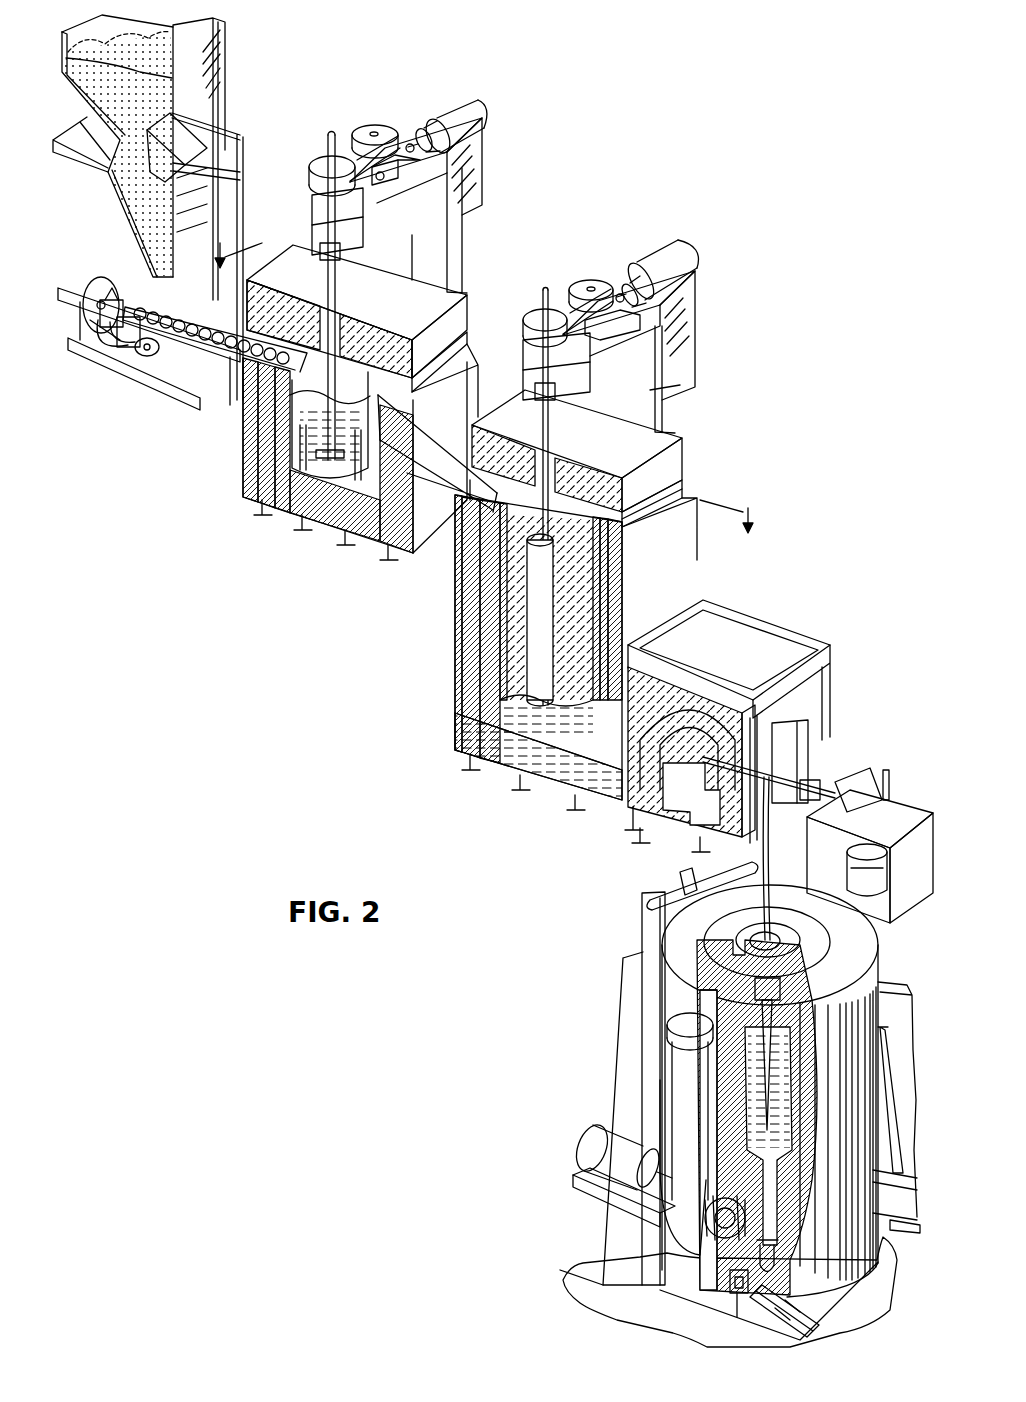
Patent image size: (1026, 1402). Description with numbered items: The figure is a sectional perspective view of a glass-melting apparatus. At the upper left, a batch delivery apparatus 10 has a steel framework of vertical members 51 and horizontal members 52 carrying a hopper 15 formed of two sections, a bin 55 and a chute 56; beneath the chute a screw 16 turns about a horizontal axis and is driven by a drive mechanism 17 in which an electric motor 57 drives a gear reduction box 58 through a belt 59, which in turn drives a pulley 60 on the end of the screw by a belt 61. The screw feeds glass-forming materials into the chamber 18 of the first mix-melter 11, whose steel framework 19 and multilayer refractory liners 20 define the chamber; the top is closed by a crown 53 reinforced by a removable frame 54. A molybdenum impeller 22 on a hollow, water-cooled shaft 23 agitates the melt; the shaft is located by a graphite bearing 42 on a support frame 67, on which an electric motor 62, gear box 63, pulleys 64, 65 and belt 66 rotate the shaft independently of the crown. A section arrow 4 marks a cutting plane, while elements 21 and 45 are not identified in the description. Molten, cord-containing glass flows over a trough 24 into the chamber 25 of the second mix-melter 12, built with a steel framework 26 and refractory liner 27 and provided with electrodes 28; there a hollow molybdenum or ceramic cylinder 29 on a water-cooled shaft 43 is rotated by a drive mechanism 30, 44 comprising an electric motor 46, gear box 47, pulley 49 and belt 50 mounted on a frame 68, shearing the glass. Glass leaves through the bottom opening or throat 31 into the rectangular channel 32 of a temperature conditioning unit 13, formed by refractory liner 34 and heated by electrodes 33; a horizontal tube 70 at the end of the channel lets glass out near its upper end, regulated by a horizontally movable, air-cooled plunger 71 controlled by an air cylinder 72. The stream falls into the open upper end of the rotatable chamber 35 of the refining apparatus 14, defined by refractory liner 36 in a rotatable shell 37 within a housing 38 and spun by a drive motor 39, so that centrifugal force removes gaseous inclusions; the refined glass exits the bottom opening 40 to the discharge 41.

The section line 4 is at (485, 388).
The batch delivery apparatus 10 is at (240, 92).
The first mix-melter 11 is at (482, 252).
The second mix-melter 12 is at (697, 422).
The temperature conditioning unit 13 is at (768, 600).
The refining apparatus 14 is at (603, 1052).
The hopper 15 is at (228, 66).
The screw 16 is at (228, 370).
The drive mechanism 17 is at (100, 372).
The chamber 18 is at (292, 400).
The steel framework 19 is at (358, 546).
The refractory liners 20 is at (258, 470).
The stirrer blade 21 is at (300, 470).
The impeller 22 is at (355, 480).
The shaft 23 is at (325, 202).
The trough 24 is at (445, 478).
The chamber 25 is at (480, 690).
The steel framework 26 is at (565, 815).
The refractory liner 27 is at (460, 652).
The electrodes 28 is at (500, 720).
The cylinder 29 is at (546, 620).
The drive mechanism 30 is at (600, 270).
The opening 31 is at (605, 790).
The channel 32 is at (730, 700).
The electrodes 33 is at (672, 705).
The refractory liner 34 is at (715, 705).
The rotatable chamber 35 is at (700, 1000).
The refractory liner 36 is at (748, 1118).
The rotatable shell 37 is at (672, 1065).
The housing 38 is at (640, 1100).
The drive motor 39 is at (575, 1178).
The bottom opening 40 is at (730, 1290).
The discharge 41 is at (778, 1320).
The graphite bearing 42 is at (340, 262).
The shaft 43 is at (540, 410).
The drive mechanism 44 is at (712, 266).
The driven pulley 45 is at (530, 312).
The electric motor 46 is at (675, 258).
The gear box 47 is at (655, 335).
The pulley 49 is at (584, 280).
The belt 50 is at (545, 290).
The vertical members 51 is at (243, 176).
The horizontal members 52 is at (200, 205).
The crown 53 is at (455, 287).
The frame 54 is at (462, 335).
The bin 55 is at (92, 85).
The chute 56 is at (130, 208).
The electric motor 57 is at (160, 372).
The gear reduction box 58 is at (130, 362).
The belt 59 is at (150, 365).
The pulley 60 is at (90, 312).
The belt 61 is at (95, 345).
The electric motor 62 is at (472, 112).
The gear box 63 is at (398, 180).
The pulley 64 is at (380, 125).
The pulley 65 is at (322, 160).
The belt 66 is at (345, 125).
The frame 67 is at (462, 215).
The frame 68 is at (648, 395).
The horizontal tube 70 is at (800, 757).
The plunger 71 is at (822, 790).
The air cylinder 72 is at (877, 775).